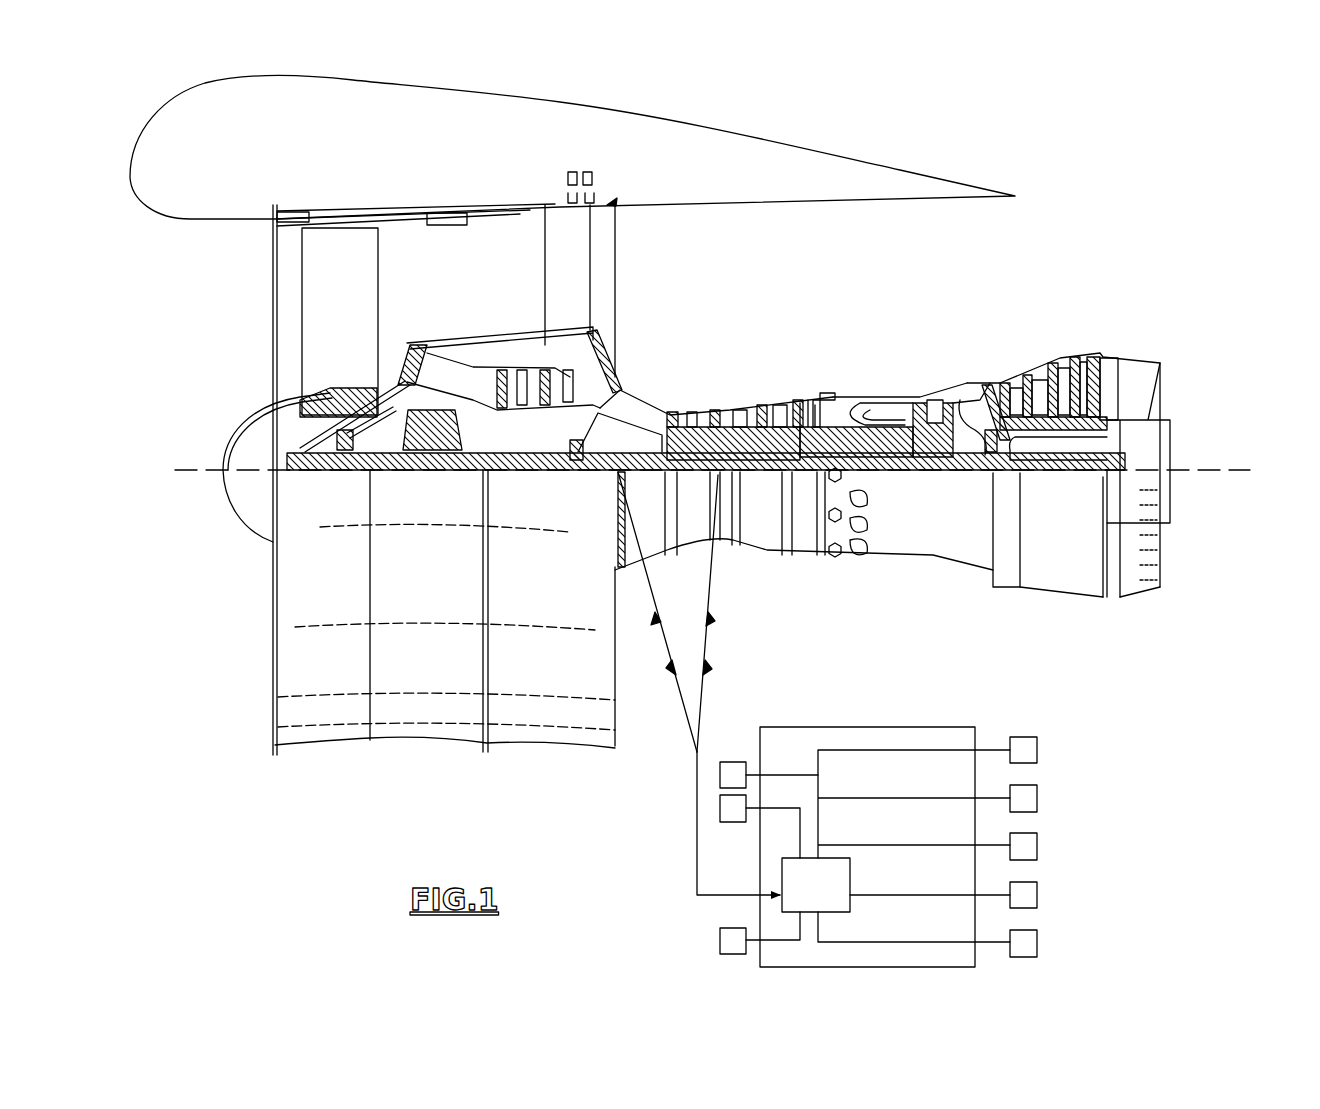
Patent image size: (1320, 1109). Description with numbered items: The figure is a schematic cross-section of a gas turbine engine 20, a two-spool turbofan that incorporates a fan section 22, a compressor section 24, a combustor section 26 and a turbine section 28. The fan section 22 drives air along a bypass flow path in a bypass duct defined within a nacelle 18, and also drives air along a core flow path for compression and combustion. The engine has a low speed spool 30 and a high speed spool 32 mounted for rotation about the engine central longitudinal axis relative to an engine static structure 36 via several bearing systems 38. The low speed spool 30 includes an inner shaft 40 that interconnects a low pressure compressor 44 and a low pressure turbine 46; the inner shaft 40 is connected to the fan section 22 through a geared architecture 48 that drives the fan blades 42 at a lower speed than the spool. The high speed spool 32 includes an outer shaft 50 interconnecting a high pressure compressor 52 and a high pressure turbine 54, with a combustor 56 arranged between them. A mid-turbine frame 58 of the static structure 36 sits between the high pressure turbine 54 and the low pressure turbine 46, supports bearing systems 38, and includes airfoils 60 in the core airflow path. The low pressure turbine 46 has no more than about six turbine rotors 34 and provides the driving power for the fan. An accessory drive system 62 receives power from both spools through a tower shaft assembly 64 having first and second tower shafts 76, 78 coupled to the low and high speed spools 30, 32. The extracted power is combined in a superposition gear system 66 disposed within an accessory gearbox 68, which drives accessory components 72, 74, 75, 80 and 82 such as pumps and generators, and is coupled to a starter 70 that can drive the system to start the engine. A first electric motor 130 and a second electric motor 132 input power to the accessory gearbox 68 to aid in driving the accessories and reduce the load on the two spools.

The nacelle 18 is at (575, 124).
The gas turbine engine 20 is at (1052, 147).
The fan section 22 is at (470, 181).
The compressor section 24 is at (848, 319).
The combustor section 26 is at (917, 319).
The turbine section 28 is at (1117, 319).
The low speed spool 30 is at (764, 486).
The high speed spool 32 is at (810, 407).
The turbine rotors 34 is at (1080, 440).
The engine static structure 36 is at (803, 560).
The bearing systems 38 is at (352, 473).
The inner shaft 40 is at (626, 468).
The fan blades 42 is at (352, 328).
The low pressure compressor 44 is at (596, 335).
The low pressure turbine 46 is at (1052, 372).
The geared architecture 48 is at (455, 455).
The outer shaft 50 is at (880, 462).
The high pressure compressor 52 is at (735, 410).
The high pressure turbine 54 is at (935, 398).
The combustor 56 is at (873, 410).
The mid-turbine frame 58 is at (976, 382).
The airfoils 60 is at (978, 440).
The accessory drive system 62 is at (1092, 413).
The tower shaft assembly 64 is at (1103, 372).
The superposition gear system 66 is at (833, 899).
The accessory gearbox 68 is at (904, 722).
The starter 70 is at (1038, 895).
The accessory component 72 is at (1038, 798).
The accessory component 74 is at (1038, 750).
The accessory component 75 is at (1038, 846).
The first tower shaft 76 is at (665, 652).
The second tower shaft 78 is at (710, 585).
The accessory component 80 is at (732, 762).
The accessory component 82 is at (733, 822).
The first electric motor 130 is at (720, 946).
The second electric motor 132 is at (1038, 950).